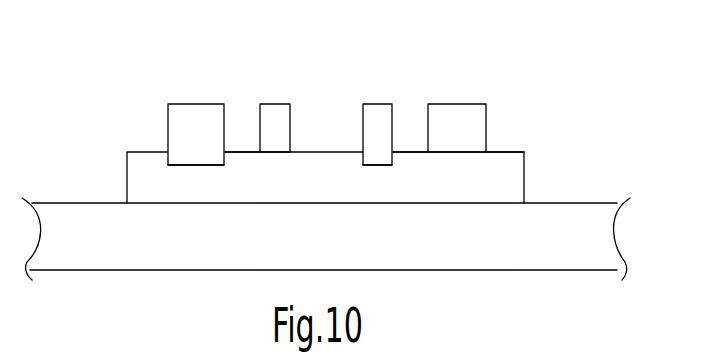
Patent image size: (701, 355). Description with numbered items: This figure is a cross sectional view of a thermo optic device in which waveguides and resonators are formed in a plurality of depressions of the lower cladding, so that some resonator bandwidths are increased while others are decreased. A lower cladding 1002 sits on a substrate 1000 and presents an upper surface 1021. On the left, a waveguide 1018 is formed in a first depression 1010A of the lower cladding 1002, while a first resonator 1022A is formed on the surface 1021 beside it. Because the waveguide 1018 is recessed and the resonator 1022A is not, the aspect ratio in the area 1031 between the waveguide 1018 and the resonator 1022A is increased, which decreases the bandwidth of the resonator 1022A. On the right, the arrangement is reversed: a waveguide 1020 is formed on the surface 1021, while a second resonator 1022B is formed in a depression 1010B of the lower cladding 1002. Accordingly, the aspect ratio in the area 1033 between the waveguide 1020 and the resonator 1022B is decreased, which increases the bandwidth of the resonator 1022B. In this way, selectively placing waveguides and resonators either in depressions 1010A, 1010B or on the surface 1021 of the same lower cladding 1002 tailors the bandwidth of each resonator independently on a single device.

The substrate 1000 is at (578, 212).
The lower cladding 1002 is at (507, 180).
The first depression 1010A is at (195, 166).
The depression 1010B is at (377, 165).
The waveguide 1018 is at (191, 112).
The waveguide 1020 is at (453, 110).
The surface 1021 is at (515, 148).
The resonator 1022A is at (270, 112).
The resonator 1022B is at (373, 110).
The area 1031 is at (242, 128).
The area 1033 is at (408, 128).